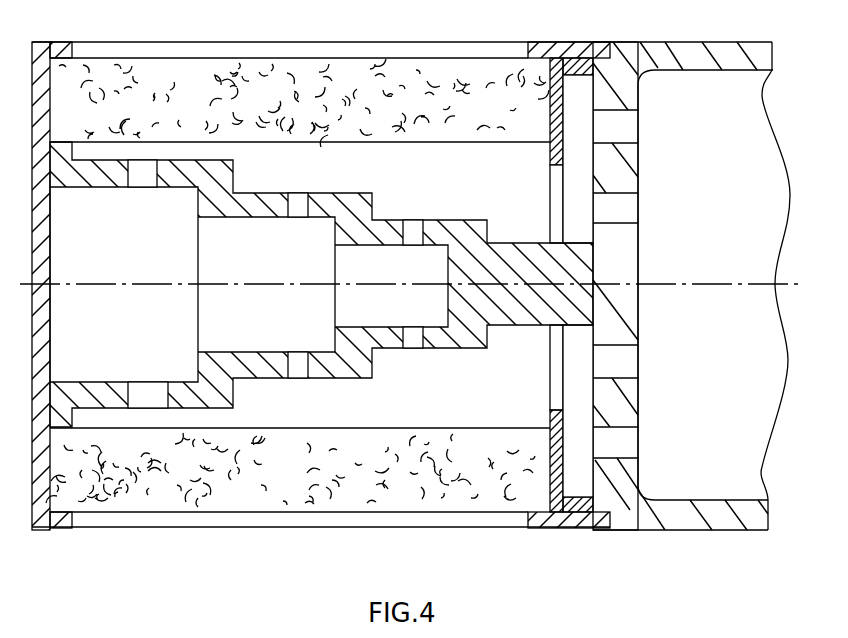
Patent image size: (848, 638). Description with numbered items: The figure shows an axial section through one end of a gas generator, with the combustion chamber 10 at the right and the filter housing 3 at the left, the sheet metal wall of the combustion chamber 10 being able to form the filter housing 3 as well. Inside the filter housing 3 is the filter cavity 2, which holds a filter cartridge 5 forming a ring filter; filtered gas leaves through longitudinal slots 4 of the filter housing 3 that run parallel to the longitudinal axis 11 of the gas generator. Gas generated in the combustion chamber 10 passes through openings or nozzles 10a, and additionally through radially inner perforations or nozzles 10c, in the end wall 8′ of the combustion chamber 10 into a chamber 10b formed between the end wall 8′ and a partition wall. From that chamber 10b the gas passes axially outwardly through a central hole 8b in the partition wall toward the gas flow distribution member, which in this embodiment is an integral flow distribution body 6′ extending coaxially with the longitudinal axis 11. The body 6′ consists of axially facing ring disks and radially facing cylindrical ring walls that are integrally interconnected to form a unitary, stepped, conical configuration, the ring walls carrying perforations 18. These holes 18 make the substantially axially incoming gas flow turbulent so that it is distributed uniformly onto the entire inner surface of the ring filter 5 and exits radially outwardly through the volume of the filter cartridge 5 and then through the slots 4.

The filter cavity 2 is at (472, 411).
The filter housing 3 is at (563, 522).
The longitudinal slots 4 is at (497, 50).
The filter cartridge 5 is at (140, 483).
The integral flow distribution body 6′ is at (356, 384).
The end wall of the combustion chamber 8′ is at (623, 407).
The central hole 8b is at (557, 197).
The combustion chamber 10 is at (758, 310).
The openings or nozzles 10a is at (628, 440).
The chamber 10b is at (573, 353).
The radially inner perforations or nozzles 10c is at (630, 360).
The longitudinal axis 11 is at (403, 301).
The perforations 18 is at (146, 188).